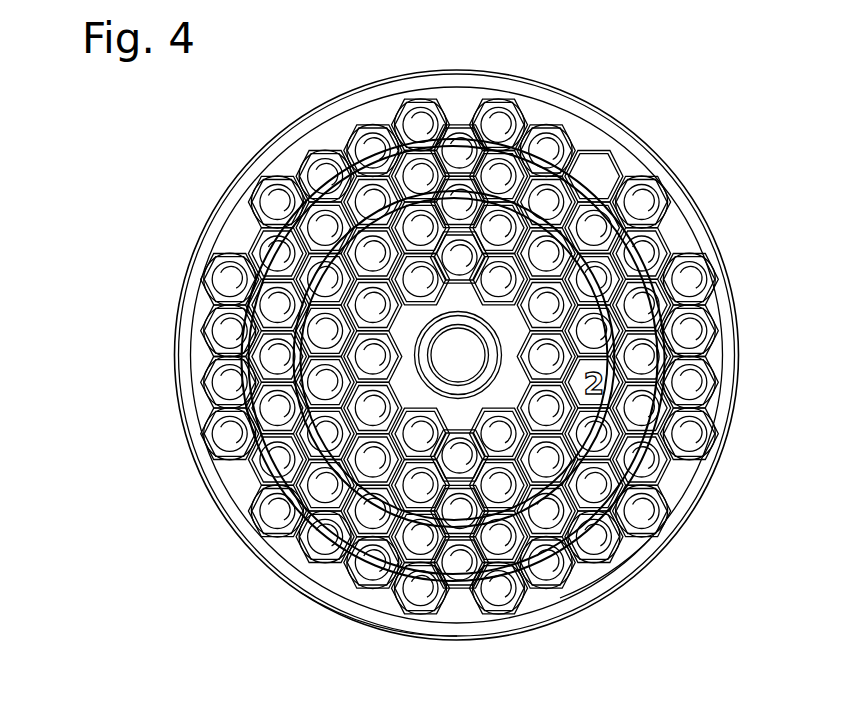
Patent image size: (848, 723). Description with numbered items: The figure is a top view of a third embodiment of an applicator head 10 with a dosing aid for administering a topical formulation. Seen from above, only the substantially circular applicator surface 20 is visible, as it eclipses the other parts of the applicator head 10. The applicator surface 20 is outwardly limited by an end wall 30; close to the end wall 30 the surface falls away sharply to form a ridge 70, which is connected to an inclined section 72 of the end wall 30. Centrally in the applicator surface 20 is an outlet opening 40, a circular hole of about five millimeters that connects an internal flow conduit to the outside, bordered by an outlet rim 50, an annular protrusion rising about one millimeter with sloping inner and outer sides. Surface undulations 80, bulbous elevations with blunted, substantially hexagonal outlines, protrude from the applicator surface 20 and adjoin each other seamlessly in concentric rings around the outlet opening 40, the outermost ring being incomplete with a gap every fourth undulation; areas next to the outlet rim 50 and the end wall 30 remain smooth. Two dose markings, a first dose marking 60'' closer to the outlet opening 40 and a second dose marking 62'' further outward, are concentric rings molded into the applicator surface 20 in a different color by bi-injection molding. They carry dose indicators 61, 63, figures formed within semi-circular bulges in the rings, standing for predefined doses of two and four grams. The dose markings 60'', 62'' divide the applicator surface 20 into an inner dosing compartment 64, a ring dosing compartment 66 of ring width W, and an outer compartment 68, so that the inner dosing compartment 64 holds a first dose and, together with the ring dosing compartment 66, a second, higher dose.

The applicator head 10 is at (706, 118).
The applicator surface 20 is at (232, 233).
The end wall 30 is at (186, 298).
The outlet opening 40 is at (465, 345).
The outlet rim 50 is at (490, 370).
The first dose marking 60'' is at (563, 359).
The first dose indicator 61 is at (610, 363).
The second dose marking 62'' is at (522, 360).
The second dose indicator 63 is at (598, 168).
The inner dosing compartment 64 is at (505, 222).
The ring dosing compartment 66 is at (620, 262).
The outer compartment 68 is at (649, 200).
The ridge 70 is at (620, 571).
The inclined section 72 is at (328, 604).
The surface undulations 80 is at (260, 518).